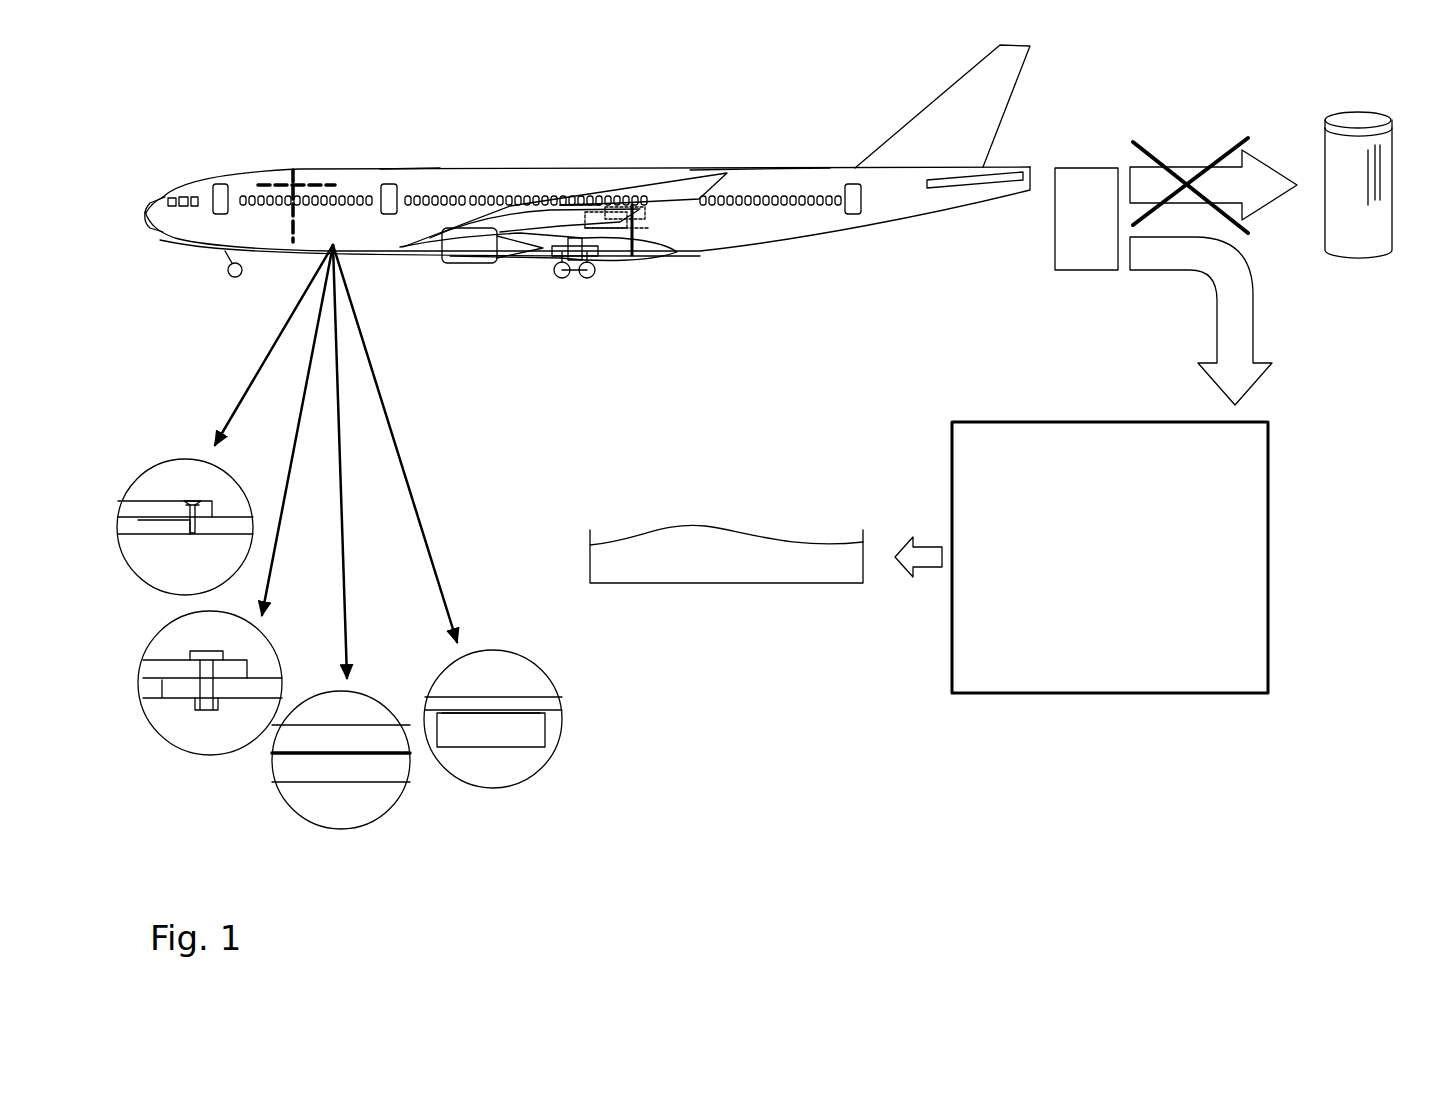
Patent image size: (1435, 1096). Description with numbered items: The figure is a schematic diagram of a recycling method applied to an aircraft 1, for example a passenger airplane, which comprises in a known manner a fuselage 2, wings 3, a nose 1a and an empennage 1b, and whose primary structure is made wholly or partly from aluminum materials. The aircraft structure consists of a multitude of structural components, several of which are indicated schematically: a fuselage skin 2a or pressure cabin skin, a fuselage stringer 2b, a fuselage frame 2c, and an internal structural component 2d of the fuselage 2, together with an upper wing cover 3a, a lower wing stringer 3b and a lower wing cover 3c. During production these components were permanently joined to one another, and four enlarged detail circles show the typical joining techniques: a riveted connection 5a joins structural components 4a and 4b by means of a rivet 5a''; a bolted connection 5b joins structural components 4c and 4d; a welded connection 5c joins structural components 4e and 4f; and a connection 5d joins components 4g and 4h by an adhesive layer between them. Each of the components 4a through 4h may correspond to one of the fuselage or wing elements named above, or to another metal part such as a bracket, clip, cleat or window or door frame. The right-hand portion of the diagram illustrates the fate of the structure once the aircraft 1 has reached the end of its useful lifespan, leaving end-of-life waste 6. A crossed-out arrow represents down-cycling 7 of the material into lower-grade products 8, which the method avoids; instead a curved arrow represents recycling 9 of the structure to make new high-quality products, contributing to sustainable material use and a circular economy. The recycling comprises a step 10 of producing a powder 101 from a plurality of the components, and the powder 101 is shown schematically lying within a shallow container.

The aircraft 1 is at (180, 120).
The nose 1a is at (148, 250).
The empennage 1b is at (900, 105).
The fuselage 2 is at (515, 180).
The fuselage skin 2a is at (410, 178).
The fuselage stringer 2b is at (315, 178).
The fuselage frame 2c is at (285, 178).
The internal structural component 2d is at (757, 215).
The wings 3 is at (632, 212).
The upper wing cover 3a is at (573, 200).
The lower wing stringer 3b is at (575, 222).
The lower wing cover 3c is at (620, 212).
The structural component 4a is at (140, 506).
The structural component 4b is at (145, 532).
The structural component 4c is at (150, 672).
The structural component 4d is at (175, 690).
The structural component 4e is at (365, 740).
The structural component 4f is at (385, 768).
The structural component 4g is at (503, 700).
The structural component 4h is at (532, 740).
The riveted connection 5a is at (176, 461).
The rivet 5a'' is at (239, 467).
The bolted connection 5b is at (190, 722).
The welded connection 5c is at (345, 810).
The adhesively bonded connection 5d is at (492, 768).
The end-of-life waste 6 is at (1100, 200).
The down-cycling 7 is at (1190, 172).
The lower-grade products 8 is at (1357, 236).
The recycling 9 is at (1235, 330).
The step of producing a powder 10 is at (1252, 583).
The powder 101 is at (753, 550).